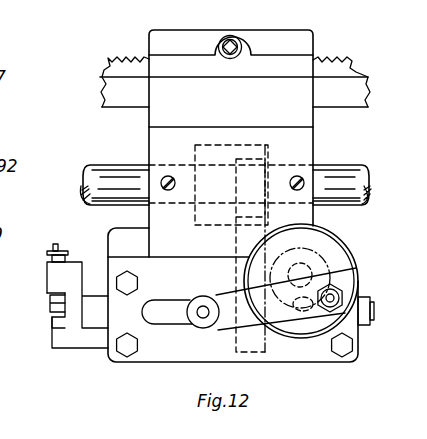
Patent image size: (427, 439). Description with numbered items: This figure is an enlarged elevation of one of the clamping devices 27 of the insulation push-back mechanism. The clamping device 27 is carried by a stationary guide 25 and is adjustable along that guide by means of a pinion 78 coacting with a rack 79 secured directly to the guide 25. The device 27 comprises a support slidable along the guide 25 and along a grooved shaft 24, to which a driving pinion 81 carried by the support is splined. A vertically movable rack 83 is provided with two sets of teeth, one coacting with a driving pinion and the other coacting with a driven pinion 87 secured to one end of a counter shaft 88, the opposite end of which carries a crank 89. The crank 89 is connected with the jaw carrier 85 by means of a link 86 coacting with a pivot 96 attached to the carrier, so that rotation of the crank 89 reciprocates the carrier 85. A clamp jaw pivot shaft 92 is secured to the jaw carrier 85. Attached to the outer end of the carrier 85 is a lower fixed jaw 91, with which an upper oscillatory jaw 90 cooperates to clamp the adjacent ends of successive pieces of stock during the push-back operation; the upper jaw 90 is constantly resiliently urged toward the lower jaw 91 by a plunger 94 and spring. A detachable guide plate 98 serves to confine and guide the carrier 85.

The grooved shaft 24 is at (95, 178).
The stationary guide 25 is at (124, 98).
The clamping device 27 is at (163, 115).
The pinion 78 is at (229, 36).
The rack 79 is at (330, 66).
The driving pinion 81 is at (221, 146).
The rack 83 is at (247, 235).
The jaw carrier 85 is at (94, 318).
The link 86 is at (229, 297).
The driven pinion 87 is at (316, 250).
The counter shaft 88 is at (304, 275).
The crank 89 is at (311, 323).
The upper oscillatory jaw 90 is at (55, 305).
The lower fixed jaw 91 is at (57, 329).
The clamp jaw pivot shaft 92 is at (373, 325).
The plunger 94 is at (56, 244).
The pivot 96 is at (204, 316).
The guide plate 98 is at (157, 353).